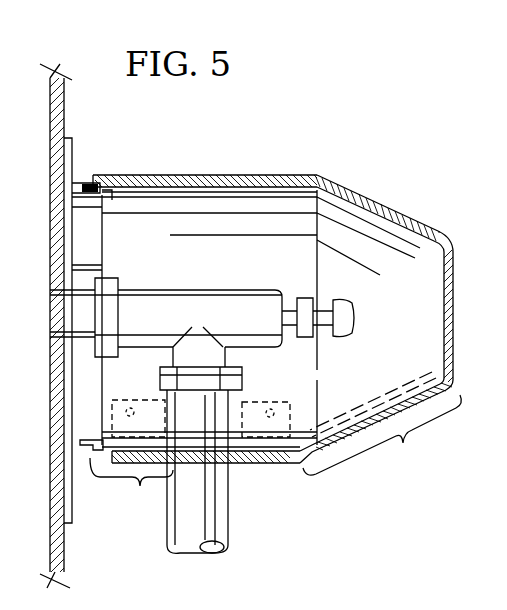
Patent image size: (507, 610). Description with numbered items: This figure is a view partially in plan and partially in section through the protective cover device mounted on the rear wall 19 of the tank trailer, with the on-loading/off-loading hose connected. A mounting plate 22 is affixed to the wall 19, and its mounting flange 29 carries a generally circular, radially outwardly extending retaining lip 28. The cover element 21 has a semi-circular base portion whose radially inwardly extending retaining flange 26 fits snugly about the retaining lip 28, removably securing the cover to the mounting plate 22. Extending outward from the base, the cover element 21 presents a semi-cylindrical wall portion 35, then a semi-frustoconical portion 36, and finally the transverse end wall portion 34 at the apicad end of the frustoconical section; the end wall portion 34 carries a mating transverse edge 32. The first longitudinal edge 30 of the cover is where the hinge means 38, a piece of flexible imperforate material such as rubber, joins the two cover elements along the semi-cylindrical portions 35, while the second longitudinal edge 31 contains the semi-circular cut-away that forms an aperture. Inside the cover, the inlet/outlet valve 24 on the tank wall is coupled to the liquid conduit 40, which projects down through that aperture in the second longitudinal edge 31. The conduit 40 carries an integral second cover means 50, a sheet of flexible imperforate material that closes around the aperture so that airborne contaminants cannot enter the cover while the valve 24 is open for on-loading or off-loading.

The rear wall 19 is at (65, 106).
The mounting plate 22 is at (81, 184).
The retaining flange 26 is at (92, 183).
The inlet/outlet valve 24 is at (207, 270).
The hinge means 38 is at (257, 176).
The cover element 21 is at (360, 252).
The transverse edge 32 is at (445, 310).
The end wall portion 34 is at (453, 328).
The semi-frustoconical portion 36 is at (380, 430).
The second longitudinal edge 31 is at (365, 426).
The first longitudinal edge 30 is at (343, 198).
The retaining lip 28 is at (83, 200).
The mounting flange 29 is at (108, 195).
The semi-cylindrical wall portion 35 is at (195, 483).
The second cover means 50 is at (278, 466).
The liquid conduit 40 is at (222, 514).